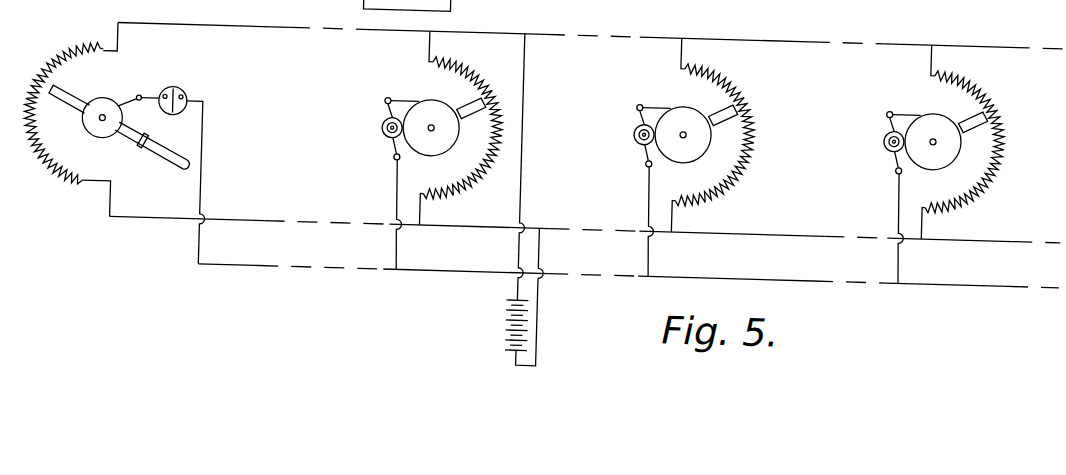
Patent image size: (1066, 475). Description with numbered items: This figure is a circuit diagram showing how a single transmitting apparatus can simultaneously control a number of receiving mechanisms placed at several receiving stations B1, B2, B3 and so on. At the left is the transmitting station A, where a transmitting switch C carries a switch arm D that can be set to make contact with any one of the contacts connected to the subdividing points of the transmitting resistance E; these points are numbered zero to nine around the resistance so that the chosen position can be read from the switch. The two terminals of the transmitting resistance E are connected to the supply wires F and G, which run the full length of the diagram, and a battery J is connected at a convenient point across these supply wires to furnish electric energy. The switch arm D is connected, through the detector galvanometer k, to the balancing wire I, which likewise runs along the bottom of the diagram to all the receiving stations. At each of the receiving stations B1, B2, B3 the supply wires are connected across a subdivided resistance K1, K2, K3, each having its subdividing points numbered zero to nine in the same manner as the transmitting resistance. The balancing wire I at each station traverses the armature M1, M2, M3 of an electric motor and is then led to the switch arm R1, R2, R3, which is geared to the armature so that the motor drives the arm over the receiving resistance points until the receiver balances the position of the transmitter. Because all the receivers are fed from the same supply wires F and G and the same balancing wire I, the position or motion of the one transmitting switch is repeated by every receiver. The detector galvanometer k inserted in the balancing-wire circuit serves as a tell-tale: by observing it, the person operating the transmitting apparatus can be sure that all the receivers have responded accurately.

The transmitting station A is at (100, 25).
The supply wire F is at (244, 30).
The supply wire G is at (585, 216).
The balancing wire I is at (274, 264).
The transmitting resistance E is at (52, 163).
The switch arm D is at (86, 102).
The transmitting switch C is at (156, 155).
The detector galvanometer k is at (190, 88).
The battery J is at (514, 302).
The receiving station B1 is at (449, 137).
The receiving station B2 is at (714, 141).
The receiving station B3 is at (947, 147).
The switch arm R1 is at (460, 129).
The switch arm R2 is at (712, 136).
The switch arm R3 is at (962, 143).
The subdivided resistance K1 is at (511, 90).
The subdivided resistance K2 is at (774, 95).
The subdivided resistance K3 is at (1012, 103).
The motor armature M1 is at (374, 183).
The motor armature M2 is at (628, 190).
The motor armature M3 is at (874, 197).